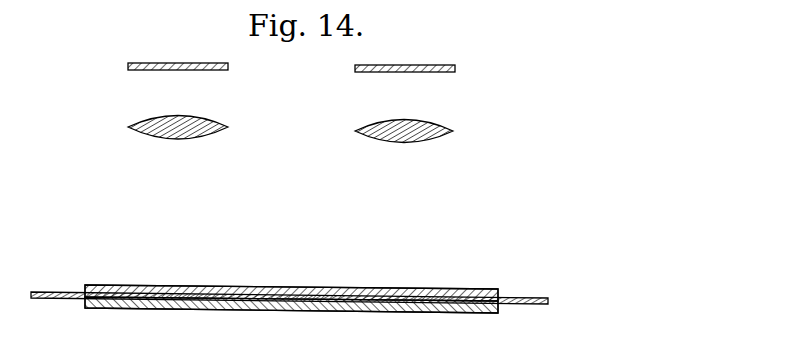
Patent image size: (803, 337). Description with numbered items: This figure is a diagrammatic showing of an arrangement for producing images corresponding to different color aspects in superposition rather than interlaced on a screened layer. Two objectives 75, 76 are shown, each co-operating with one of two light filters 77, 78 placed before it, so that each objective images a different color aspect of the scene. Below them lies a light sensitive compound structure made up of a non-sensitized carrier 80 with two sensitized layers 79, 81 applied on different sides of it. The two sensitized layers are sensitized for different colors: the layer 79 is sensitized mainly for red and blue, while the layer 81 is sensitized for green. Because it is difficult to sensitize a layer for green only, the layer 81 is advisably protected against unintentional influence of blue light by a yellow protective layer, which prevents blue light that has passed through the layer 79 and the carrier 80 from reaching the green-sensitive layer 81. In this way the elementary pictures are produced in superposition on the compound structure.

The objective 75 is at (412, 133).
The objective 76 is at (185, 129).
The light filter 77 is at (375, 72).
The light filter 78 is at (154, 69).
The sensitized layer 79 is at (165, 290).
The non-sensitized carrier 80 is at (53, 290).
The sensitized layer 81 is at (313, 297).